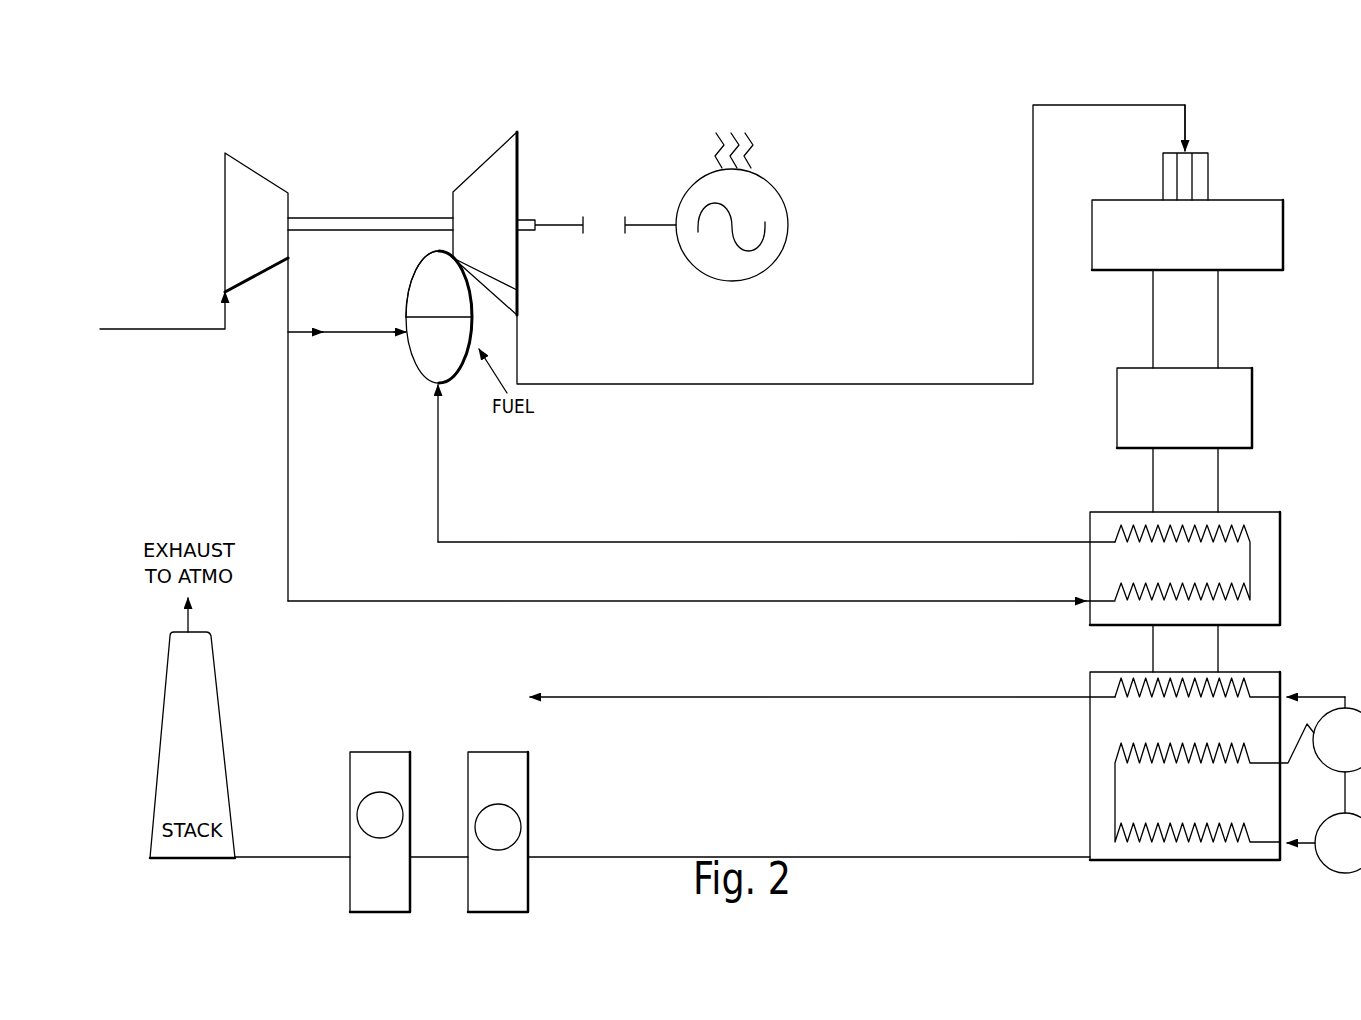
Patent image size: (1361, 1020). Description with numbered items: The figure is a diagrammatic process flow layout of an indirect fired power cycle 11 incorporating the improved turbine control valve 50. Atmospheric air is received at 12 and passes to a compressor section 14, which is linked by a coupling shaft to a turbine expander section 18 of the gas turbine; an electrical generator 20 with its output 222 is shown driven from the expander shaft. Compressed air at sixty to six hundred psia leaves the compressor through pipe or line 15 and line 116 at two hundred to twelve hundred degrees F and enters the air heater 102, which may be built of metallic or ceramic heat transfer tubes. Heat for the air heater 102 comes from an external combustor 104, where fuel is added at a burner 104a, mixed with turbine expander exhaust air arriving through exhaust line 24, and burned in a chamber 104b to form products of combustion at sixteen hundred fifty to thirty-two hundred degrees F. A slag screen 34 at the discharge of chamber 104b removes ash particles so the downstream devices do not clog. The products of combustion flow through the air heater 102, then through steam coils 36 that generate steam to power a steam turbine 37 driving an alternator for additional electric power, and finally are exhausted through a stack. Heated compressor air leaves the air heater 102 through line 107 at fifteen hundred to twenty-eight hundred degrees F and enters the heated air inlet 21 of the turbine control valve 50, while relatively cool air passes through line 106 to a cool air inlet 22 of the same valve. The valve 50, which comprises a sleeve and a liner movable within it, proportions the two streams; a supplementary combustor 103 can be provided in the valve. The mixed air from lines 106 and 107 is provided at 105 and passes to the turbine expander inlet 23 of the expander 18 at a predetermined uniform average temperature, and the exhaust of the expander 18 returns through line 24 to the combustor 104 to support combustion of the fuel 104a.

The indirect fired power cycle 11 is at (186, 132).
The atmospheric air inlet 12 is at (158, 329).
The compressor section 14 is at (253, 168).
The compressor discharge line 15 is at (288, 283).
The turbine expander section 18 is at (473, 170).
The generator 20 is at (762, 272).
The heated air inlet 21 is at (431, 389).
The cool air inlet 22 is at (402, 338).
The turbine expander inlet 23 is at (435, 246).
The exhaust line 24 is at (1033, 150).
The slag screen 34 is at (1253, 423).
The steam coils 36 is at (1090, 730).
The steam turbine 37 is at (805, 684).
The turbine control valve 50 is at (461, 388).
The air heater 102 is at (1280, 594).
The supplementary combustor 103 is at (436, 333).
The external combustor 104 is at (1208, 190).
The burner 104a is at (1245, 138).
The combustion chamber 104b is at (1230, 272).
The mixed air outlet 105 is at (417, 283).
The cool air line 106 is at (307, 331).
The heated air line 107 is at (996, 542).
The compressor air line to air heater 116 is at (640, 602).
The generator electrical output 222 is at (748, 150).